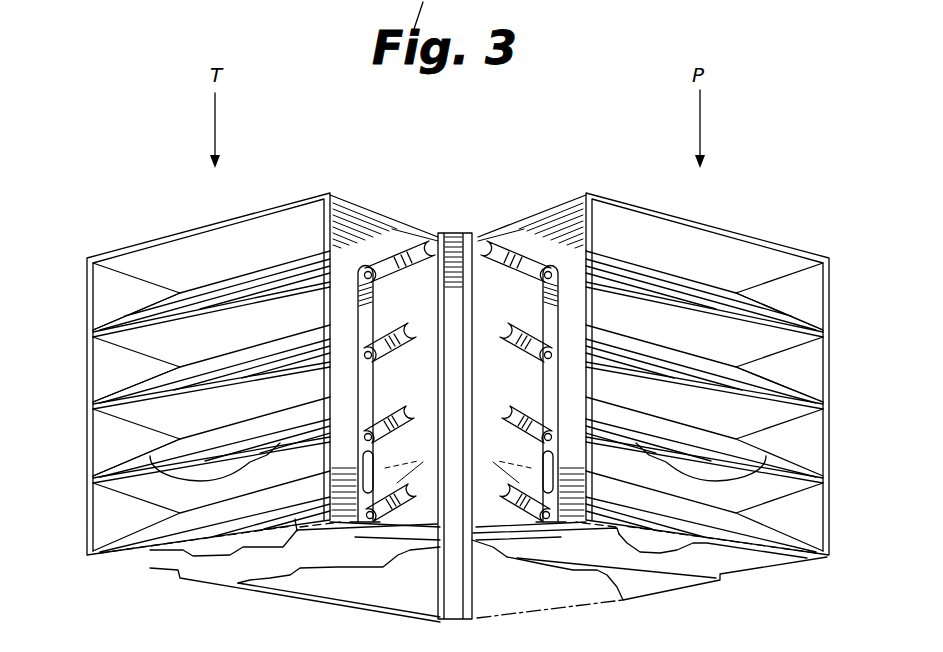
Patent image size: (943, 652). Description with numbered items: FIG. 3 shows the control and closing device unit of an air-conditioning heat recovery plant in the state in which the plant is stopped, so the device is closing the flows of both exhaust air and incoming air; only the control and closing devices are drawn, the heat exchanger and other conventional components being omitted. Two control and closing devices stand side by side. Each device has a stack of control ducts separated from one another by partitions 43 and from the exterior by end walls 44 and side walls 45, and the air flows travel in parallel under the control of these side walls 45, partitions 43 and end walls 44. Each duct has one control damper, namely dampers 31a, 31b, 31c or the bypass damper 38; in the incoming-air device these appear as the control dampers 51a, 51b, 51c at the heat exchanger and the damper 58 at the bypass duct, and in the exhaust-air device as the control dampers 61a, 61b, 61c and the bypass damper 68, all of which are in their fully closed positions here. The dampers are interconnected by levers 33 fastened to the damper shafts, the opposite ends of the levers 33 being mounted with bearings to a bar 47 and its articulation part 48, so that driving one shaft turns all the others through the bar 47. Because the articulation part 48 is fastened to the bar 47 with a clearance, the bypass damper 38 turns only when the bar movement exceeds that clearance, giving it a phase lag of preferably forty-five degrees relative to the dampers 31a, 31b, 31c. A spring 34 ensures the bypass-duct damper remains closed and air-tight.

The end wall 44 is at (177, 232).
The side wall 45 is at (87, 533).
The control damper 51a is at (116, 281).
The control damper 51b is at (116, 353).
The control damper 51c is at (122, 433).
The control damper 31a is at (165, 297).
The control damper 31b is at (165, 370).
The control damper 31c is at (157, 453).
The control damper 58 is at (120, 508).
The control damper 61a is at (805, 290).
The control damper 61b is at (805, 368).
The control damper 61c is at (800, 440).
The control damper 68 is at (805, 518).
The partition 43 is at (688, 377).
The lever 33 is at (382, 262).
The bar 47 is at (375, 296).
The articulation part 48 is at (567, 497).
The spring 34 is at (523, 523).
The control damper 38 is at (243, 523).